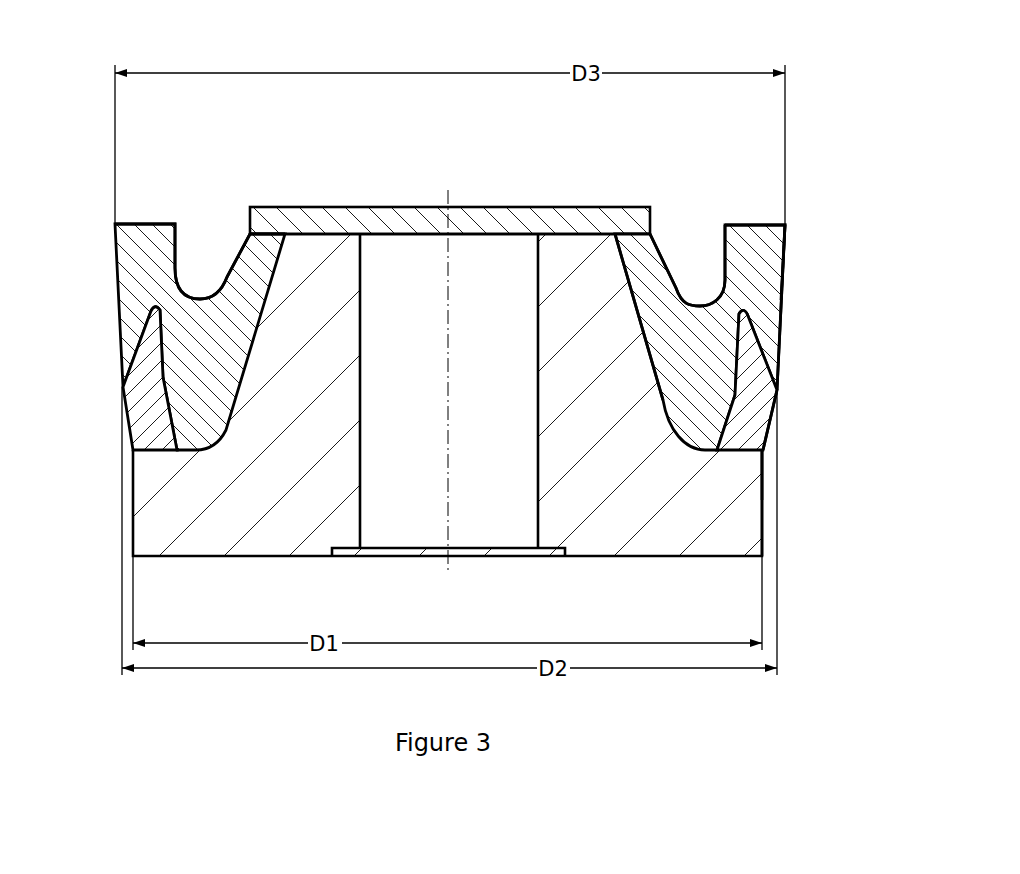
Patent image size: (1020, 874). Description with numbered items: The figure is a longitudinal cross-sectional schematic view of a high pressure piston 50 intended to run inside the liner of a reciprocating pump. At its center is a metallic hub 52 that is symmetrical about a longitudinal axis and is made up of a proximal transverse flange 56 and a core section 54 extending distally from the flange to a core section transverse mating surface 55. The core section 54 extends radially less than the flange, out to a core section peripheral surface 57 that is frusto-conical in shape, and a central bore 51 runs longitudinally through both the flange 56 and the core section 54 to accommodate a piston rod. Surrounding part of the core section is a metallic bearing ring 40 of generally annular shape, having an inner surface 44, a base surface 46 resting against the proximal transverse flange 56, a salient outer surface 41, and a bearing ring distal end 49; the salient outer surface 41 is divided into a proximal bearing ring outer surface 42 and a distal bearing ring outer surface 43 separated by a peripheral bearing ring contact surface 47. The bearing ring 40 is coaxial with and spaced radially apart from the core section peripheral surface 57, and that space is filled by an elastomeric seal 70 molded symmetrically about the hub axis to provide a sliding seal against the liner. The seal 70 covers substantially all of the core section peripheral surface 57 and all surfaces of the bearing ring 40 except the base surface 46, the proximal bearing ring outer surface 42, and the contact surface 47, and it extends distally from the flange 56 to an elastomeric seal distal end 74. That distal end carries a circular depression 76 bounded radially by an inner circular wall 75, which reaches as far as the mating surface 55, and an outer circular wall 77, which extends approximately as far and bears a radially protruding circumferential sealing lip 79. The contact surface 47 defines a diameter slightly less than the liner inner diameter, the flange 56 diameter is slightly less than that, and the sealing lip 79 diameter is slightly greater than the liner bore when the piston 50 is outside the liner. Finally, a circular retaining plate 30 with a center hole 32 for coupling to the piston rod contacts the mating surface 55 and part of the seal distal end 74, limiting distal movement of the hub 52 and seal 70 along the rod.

The high pressure piston 50 is at (107, 147).
The circular retaining plate 30 is at (337, 207).
The center hole 32 is at (537, 223).
The core section transverse mating surface 55 is at (347, 234).
The central bore 51 is at (537, 273).
The metallic hub 52 is at (609, 572).
The core section 54 is at (597, 312).
The proximal transverse flange 56 is at (180, 516).
The elastomeric seal 70 is at (135, 296).
The outer circular wall 77 is at (176, 262).
The core section peripheral surface 57 is at (226, 281).
The inner circular wall 75 is at (244, 242).
The circular depression 76 is at (696, 304).
The inner surface 44 is at (709, 305).
The elastomeric seal distal end 74 is at (757, 210).
The circumferential sealing lip 79 is at (746, 290).
The bearing ring distal end 49 is at (748, 300).
The distal bearing ring outer surface 43 is at (778, 322).
The metallic bearing ring 40 is at (135, 422).
The salient outer surface 41 is at (779, 388).
The peripheral bearing ring contact surface 47 is at (779, 398).
The proximal bearing ring outer surface 42 is at (771, 440).
The base surface 46 is at (740, 452).